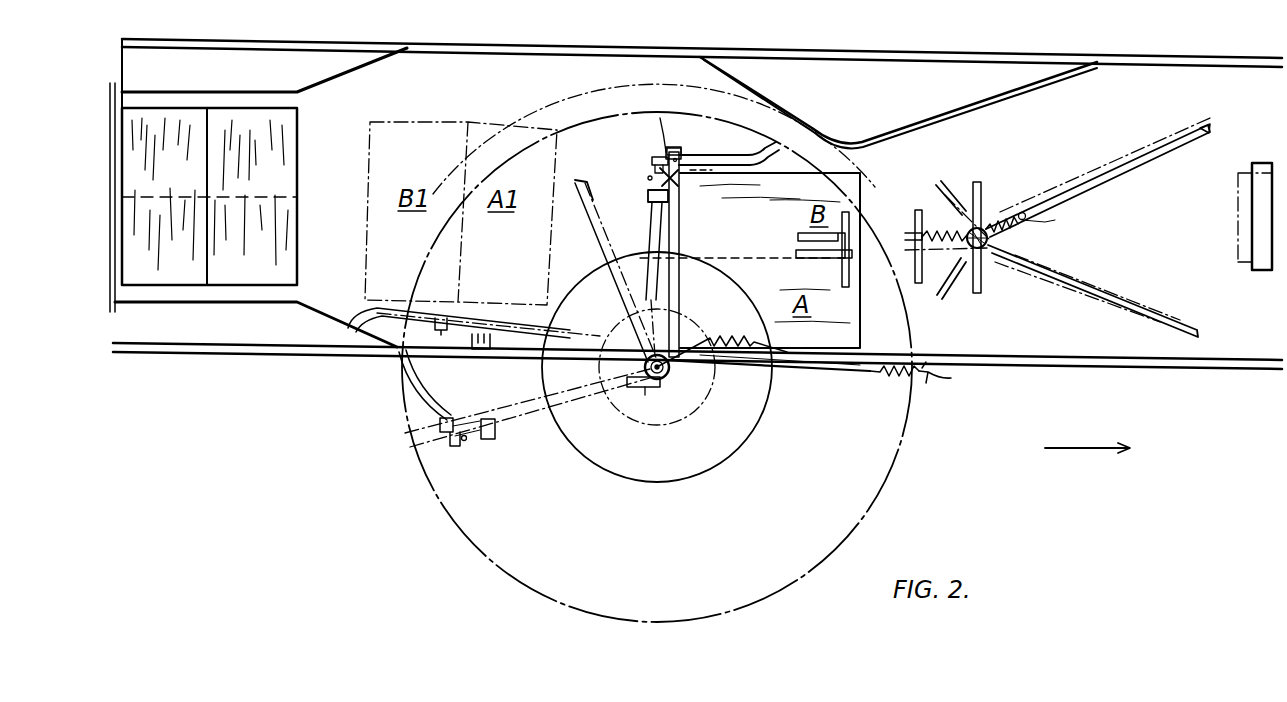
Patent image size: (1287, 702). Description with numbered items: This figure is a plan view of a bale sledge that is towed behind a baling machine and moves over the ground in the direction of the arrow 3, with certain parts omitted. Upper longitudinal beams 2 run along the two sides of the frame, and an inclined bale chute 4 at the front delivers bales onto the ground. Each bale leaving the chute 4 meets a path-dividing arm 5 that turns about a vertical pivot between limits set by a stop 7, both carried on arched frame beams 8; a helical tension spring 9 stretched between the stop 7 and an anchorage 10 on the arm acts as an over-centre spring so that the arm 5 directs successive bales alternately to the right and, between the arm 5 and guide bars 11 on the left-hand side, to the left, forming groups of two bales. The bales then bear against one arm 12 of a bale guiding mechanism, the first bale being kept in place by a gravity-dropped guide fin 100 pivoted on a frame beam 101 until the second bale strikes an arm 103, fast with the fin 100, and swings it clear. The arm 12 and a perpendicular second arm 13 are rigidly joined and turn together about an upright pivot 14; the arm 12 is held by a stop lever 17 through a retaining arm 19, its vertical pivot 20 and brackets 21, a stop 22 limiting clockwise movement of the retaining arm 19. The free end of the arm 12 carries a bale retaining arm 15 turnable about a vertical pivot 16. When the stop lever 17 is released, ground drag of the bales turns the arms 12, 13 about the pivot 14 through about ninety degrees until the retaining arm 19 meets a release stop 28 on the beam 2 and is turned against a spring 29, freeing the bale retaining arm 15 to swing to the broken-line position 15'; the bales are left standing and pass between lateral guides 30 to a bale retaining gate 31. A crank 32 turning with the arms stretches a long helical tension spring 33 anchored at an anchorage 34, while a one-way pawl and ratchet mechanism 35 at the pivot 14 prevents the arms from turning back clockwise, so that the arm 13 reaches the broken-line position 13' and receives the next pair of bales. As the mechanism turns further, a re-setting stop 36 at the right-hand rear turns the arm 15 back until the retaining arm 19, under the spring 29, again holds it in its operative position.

The longitudinal beams 2 is at (1123, 58).
The arrow indicating direction of travel 3 is at (1090, 445).
The bale chute 4 is at (1251, 270).
The path-dividing arm 5 is at (1212, 126).
The stop 7 is at (912, 242).
The arched frame beams 8 is at (975, 182).
The helical tension spring 9 is at (993, 213).
The anchorage 10 is at (1048, 219).
The guide bars 11 is at (936, 117).
The arm of bale guiding mechanism 12 is at (680, 243).
The second arm of bale guiding mechanism 13 is at (766, 382).
The displaced position of arm 13 13' is at (613, 271).
The upright pivot 14 is at (672, 373).
The bale retaining arm 15 is at (729, 136).
The displaced position of bale retaining arm 15' is at (459, 307).
The vertical pivot 16 is at (674, 150).
The stop lever 17 is at (650, 176).
The retaining arm 19 is at (646, 233).
The vertical pivot 20 is at (652, 192).
The brackets 21 is at (650, 208).
The stop 22 is at (673, 178).
The release stop 28 is at (541, 356).
The helical tension spring 29 is at (658, 123).
The lateral guides 30 is at (229, 89).
The bale retaining door or gate 31 is at (113, 290).
The crank 32 is at (712, 334).
The long helical tension spring 33 is at (896, 379).
The anchorage 34 is at (923, 378).
The one-way pawl and ratchet mechanism 35 is at (653, 393).
The re-setting stop 36 is at (398, 355).
The guide fin 100 is at (812, 258).
The frame beam 101 is at (850, 283).
The arm 103 is at (799, 236).